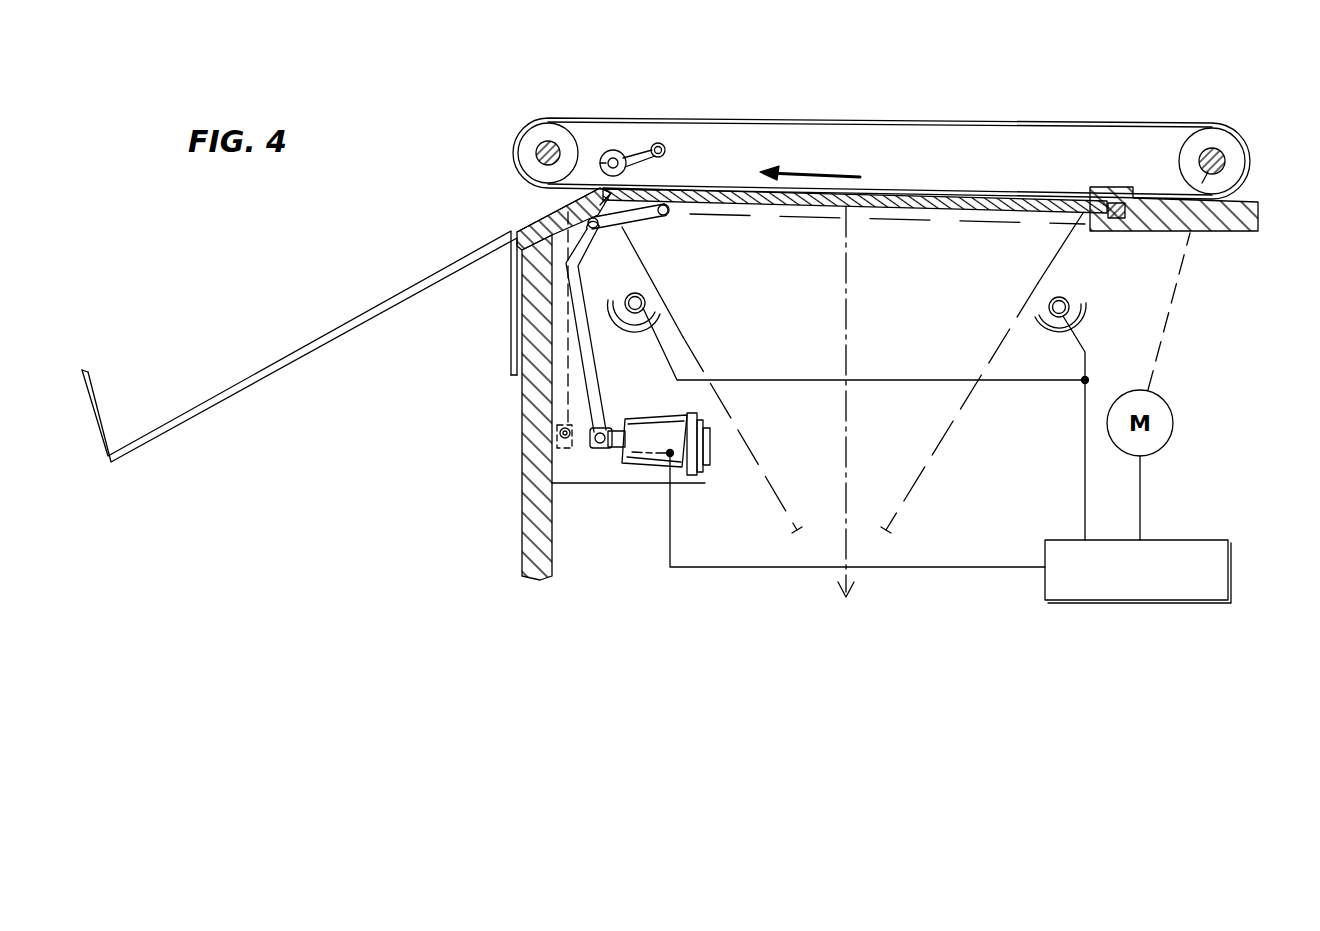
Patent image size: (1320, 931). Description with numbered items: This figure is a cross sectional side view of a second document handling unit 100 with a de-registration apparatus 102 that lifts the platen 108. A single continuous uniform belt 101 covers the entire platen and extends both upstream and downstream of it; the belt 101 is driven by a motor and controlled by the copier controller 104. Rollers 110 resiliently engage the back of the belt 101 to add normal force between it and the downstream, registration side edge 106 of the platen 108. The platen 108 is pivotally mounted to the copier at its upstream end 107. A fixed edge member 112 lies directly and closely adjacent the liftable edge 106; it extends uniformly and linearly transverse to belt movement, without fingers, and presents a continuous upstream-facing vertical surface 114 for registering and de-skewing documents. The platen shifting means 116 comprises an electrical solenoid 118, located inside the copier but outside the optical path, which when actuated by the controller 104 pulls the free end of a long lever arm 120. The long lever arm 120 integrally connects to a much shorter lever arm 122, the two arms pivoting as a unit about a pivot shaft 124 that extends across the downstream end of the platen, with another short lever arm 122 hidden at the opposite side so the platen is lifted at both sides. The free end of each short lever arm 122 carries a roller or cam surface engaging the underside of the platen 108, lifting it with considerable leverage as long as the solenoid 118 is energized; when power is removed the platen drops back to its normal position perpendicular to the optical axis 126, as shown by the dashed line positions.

The document handling unit 100 is at (957, 87).
The belt 101 is at (722, 117).
The de-registration apparatus 102 is at (647, 249).
The controller 104 is at (1185, 540).
The downstream edge of the platen 106 is at (645, 191).
The upstream end of the platen 107 is at (1107, 216).
The platen 108 is at (918, 193).
The rollers 110 is at (627, 144).
The fixed edge member 112 is at (590, 188).
The upstream-facing vertical surface 114 is at (578, 204).
The platen shifting means 116 is at (598, 251).
The electrical solenoid 118 is at (648, 458).
The long lever arm 120 is at (598, 374).
The short lever arm 122 is at (645, 216).
The pivot shaft 124 is at (527, 242).
The optical axis 126 is at (848, 343).